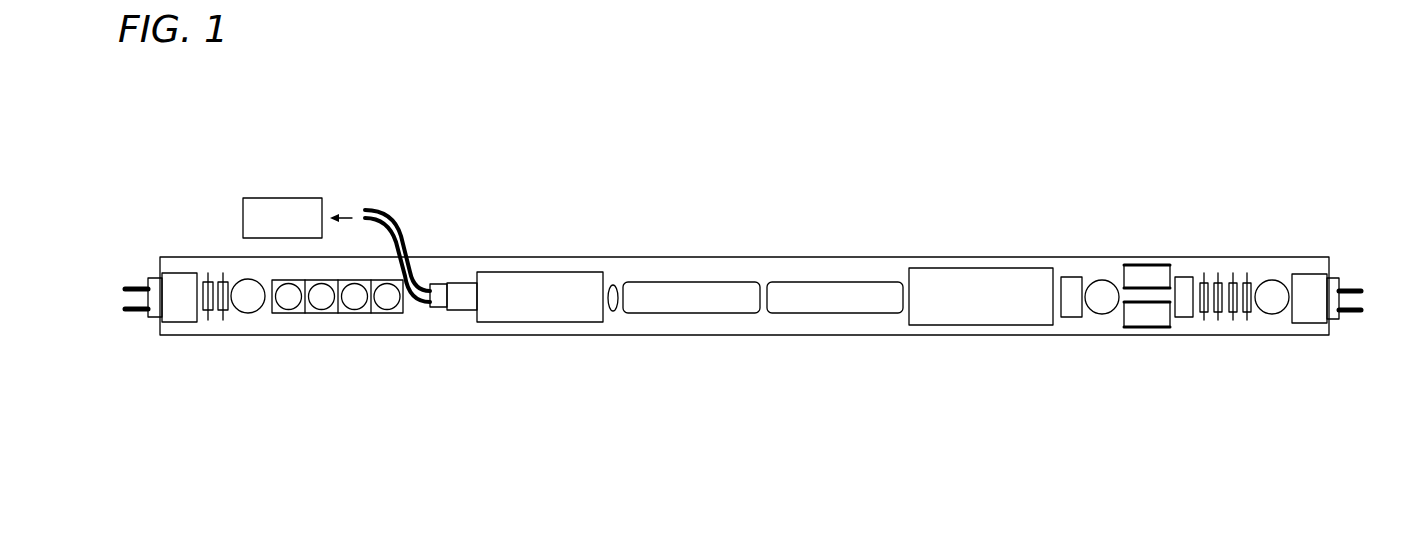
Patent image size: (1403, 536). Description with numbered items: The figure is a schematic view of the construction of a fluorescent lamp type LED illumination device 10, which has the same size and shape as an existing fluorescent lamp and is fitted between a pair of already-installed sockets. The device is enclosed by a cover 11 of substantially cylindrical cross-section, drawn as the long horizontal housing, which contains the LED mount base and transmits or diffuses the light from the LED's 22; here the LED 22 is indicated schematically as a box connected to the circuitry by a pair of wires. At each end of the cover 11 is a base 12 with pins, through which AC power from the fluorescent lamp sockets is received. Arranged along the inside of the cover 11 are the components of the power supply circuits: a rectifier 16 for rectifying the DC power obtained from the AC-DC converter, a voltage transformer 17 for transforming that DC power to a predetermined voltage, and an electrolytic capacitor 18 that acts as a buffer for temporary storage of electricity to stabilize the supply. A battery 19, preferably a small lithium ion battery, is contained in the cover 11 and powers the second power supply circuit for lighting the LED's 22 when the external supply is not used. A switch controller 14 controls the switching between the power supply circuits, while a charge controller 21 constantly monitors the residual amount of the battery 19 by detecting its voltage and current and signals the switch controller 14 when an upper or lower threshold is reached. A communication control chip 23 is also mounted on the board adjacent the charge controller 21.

The fluorescent lamp type LED illumination device 10 is at (172, 241).
The cover 11 is at (820, 257).
The base 12 is at (143, 320).
The switch controller 14 is at (545, 322).
The rectifier 16 is at (248, 297).
The voltage transformer 17 is at (338, 318).
The electrolytic capacitor 18 is at (765, 322).
The battery 19 is at (982, 325).
The charge controller 21 is at (1147, 272).
The LED 22 is at (280, 198).
The communication control chip 23 is at (1157, 325).